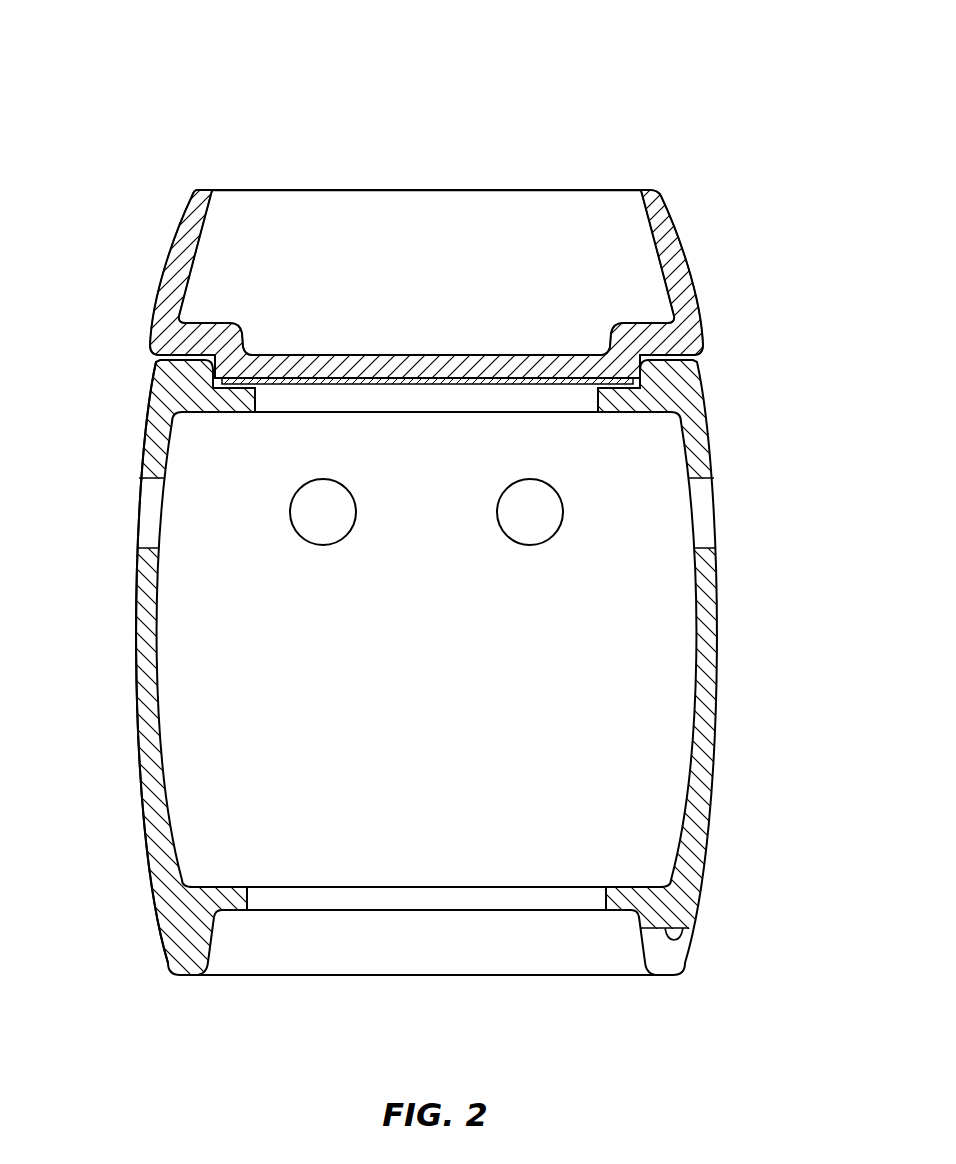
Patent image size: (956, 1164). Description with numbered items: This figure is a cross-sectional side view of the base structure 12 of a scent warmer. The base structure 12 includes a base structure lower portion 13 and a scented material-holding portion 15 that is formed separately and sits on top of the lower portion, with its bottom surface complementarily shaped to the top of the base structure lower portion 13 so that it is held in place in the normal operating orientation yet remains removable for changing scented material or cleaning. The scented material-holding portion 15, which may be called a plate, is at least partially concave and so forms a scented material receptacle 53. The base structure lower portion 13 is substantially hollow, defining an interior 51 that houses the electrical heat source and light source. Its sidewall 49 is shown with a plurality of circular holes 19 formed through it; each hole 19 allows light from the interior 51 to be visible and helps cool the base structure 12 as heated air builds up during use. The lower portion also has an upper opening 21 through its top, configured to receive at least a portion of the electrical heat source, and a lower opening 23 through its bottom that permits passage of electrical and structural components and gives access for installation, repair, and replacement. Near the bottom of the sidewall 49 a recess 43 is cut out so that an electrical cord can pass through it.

The base structure 12 is at (505, 130).
The base structure lower portion 13 is at (720, 628).
The scented material-holding portion 15 is at (703, 283).
The hole 19 is at (150, 546).
The upper opening 21 is at (255, 396).
The lower opening 23 is at (248, 897).
The recess 43 is at (673, 945).
The sidewall 49 is at (140, 684).
The interior 51 is at (414, 680).
The scented material receptacle 53 is at (414, 284).